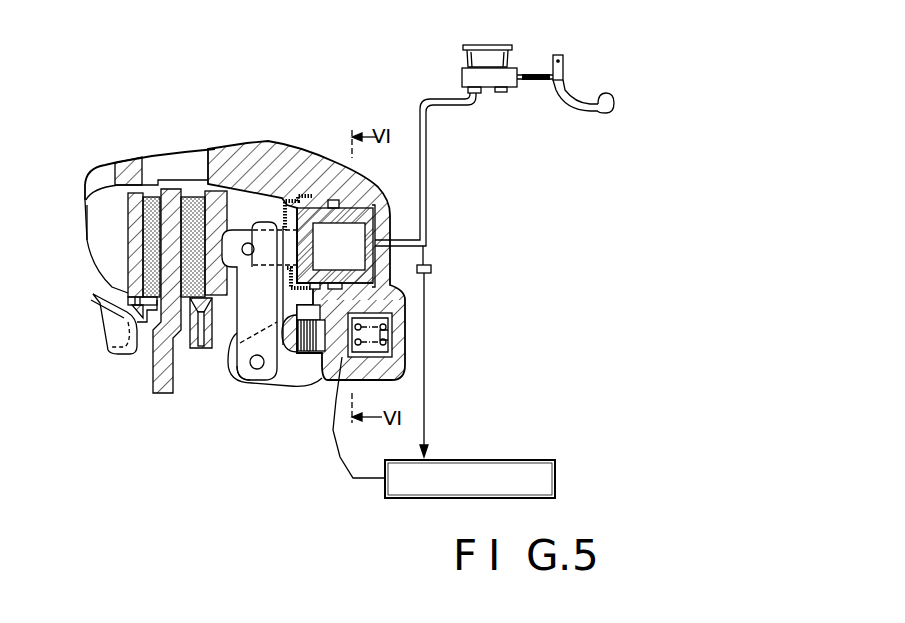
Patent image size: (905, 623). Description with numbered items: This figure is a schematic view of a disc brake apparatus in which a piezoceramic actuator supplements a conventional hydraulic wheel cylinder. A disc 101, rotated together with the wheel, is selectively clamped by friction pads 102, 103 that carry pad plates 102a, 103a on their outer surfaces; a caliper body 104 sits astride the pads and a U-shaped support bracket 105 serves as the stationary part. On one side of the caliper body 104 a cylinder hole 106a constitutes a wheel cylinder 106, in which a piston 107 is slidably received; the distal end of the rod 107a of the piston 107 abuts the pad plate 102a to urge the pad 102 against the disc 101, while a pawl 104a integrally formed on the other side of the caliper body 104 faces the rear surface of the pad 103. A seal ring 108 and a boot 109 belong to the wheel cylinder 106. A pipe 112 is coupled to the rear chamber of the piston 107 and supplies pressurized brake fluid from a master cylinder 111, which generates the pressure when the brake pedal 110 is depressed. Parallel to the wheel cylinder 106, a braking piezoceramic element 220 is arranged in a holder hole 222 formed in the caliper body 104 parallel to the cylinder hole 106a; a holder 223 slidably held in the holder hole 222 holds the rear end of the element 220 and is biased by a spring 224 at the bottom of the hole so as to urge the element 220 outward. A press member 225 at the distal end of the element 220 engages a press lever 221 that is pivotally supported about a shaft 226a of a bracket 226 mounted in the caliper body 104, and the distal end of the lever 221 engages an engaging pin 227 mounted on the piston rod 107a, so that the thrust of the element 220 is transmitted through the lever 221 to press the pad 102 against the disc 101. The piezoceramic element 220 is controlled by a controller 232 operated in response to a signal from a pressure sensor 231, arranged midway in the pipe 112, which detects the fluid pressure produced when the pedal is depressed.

The disc 101 is at (170, 189).
The friction pad 102 is at (192, 197).
The pad plate 102a is at (216, 191).
The friction pad 103 is at (150, 197).
The pad plate 103a is at (134, 193).
The caliper body 104 is at (260, 147).
The pawl 104a is at (106, 262).
The U-shaped support bracket 105 is at (117, 322).
The wheel cylinder 106 is at (368, 202).
The cylinder hole 106a is at (365, 288).
The piston 107 is at (393, 298).
The rod 107a is at (236, 233).
The seal ring 108 is at (333, 200).
The boot 109 is at (303, 192).
The brake pedal 110 is at (585, 113).
The master cylinder 111 is at (490, 45).
The pipe 112 is at (428, 160).
The braking piezoceramic element 220 is at (308, 362).
The press lever 221 is at (232, 333).
The holder hole 222 is at (393, 348).
The holder 223 is at (359, 417).
The spring 224 is at (390, 342).
The press member 225 is at (288, 357).
The bracket 226 is at (231, 375).
The shaft 226a is at (255, 370).
The engaging pin 227 is at (260, 258).
The pressure sensor 231 is at (432, 266).
The controller 232 is at (522, 462).